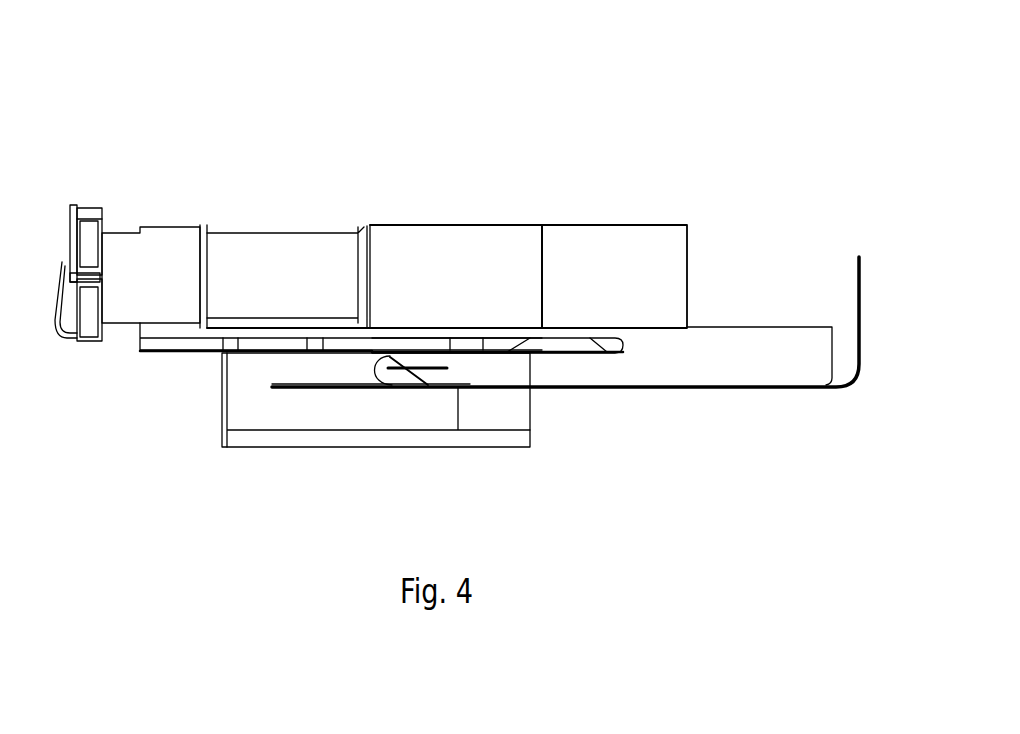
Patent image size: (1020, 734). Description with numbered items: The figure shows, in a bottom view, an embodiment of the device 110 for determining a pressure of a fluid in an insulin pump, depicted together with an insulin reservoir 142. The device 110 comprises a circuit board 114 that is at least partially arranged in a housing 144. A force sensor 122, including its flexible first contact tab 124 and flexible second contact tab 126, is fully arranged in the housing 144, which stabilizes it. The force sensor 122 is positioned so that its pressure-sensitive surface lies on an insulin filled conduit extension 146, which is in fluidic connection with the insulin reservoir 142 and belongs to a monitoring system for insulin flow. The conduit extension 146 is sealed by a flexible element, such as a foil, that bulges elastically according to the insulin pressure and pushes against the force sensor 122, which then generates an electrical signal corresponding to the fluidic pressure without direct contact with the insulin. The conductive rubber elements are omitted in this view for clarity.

The device 110 is at (770, 176).
The circuit board 114 is at (603, 390).
The force sensor 122 is at (480, 372).
The first contact tab 124 is at (428, 365).
The second contact tab 126 is at (398, 388).
The insulin reservoir 142 is at (605, 222).
The housing 144 is at (316, 450).
The insulin filled conduit extension 146 is at (500, 352).